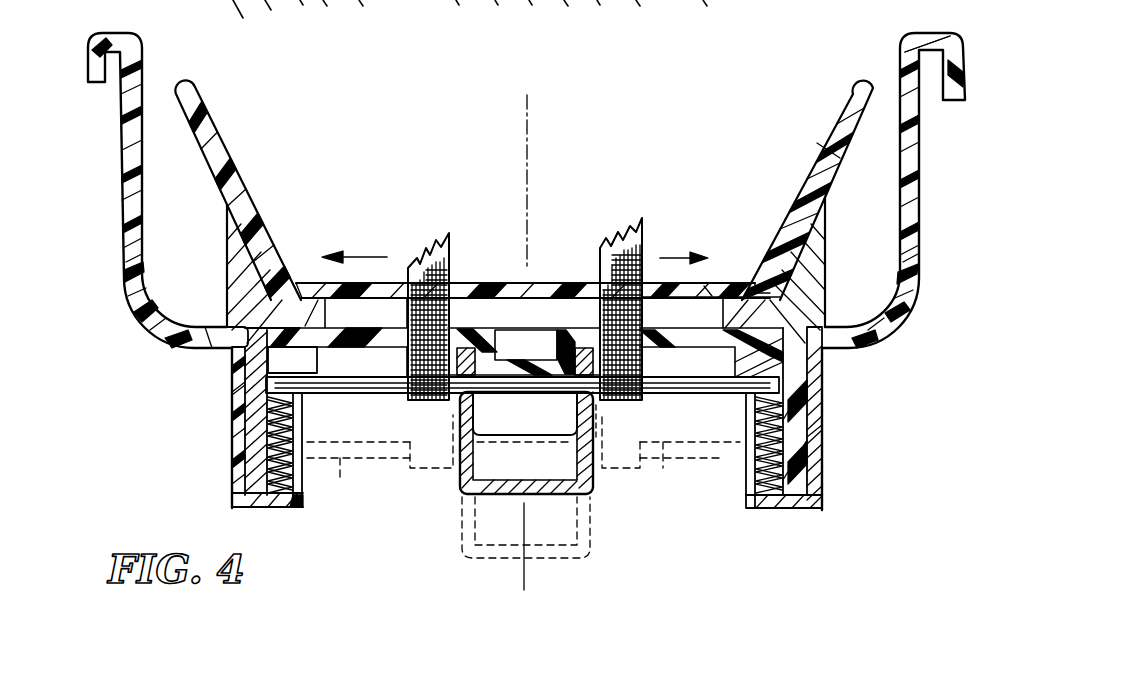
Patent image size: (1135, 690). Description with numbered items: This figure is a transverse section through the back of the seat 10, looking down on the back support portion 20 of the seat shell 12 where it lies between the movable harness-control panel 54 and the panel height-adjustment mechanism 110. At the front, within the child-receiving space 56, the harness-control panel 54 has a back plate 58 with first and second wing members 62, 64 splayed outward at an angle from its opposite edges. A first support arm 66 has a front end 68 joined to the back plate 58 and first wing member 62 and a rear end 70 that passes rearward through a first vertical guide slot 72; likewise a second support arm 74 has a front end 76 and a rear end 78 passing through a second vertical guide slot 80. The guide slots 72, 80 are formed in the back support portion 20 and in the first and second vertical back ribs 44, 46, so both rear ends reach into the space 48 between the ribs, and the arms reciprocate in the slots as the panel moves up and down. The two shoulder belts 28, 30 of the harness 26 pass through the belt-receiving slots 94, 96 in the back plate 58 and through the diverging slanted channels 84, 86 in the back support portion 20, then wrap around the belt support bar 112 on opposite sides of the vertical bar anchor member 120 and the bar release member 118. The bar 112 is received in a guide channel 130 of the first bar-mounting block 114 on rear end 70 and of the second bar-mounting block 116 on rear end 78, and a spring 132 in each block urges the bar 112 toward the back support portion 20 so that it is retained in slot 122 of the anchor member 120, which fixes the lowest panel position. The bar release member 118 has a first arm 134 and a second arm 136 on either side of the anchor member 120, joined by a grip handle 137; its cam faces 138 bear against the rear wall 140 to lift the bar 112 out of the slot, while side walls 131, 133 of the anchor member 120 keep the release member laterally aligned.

The seat 10 is at (802, 68).
The seat shell 12 is at (148, 76).
The back support portion 20 is at (700, 330).
The harness 26 is at (630, 212).
The first shoulder belt 28 is at (433, 262).
The second shoulder belt 30 is at (632, 246).
The first vertical back rib 44 is at (210, 412).
The second vertical back rib 46 is at (828, 433).
The space 48 is at (662, 495).
The harness-control panel 54 is at (790, 150).
The child-receiving space 56 is at (862, 68).
The back plate 58 is at (528, 281).
The first wing member 62 is at (210, 138).
The second wing member 64 is at (808, 197).
The first support arm 66 is at (212, 278).
The front end 68 is at (237, 300).
The rear end 70 is at (250, 432).
The first vertical guide slot 72 is at (232, 348).
The second support arm 74 is at (850, 292).
The front end 76 is at (815, 298).
The rear end 78 is at (793, 470).
The second vertical guide slot 80 is at (802, 374).
The first slanted channel 84 is at (410, 327).
The second slanted channel 86 is at (640, 322).
The first belt-receiving slot 94 is at (350, 288).
The second belt-receiving slot 96 is at (697, 292).
The panel height-adjustment mechanism 110 is at (355, 528).
The belt support bar 112 is at (501, 462).
The first bar-mounting block 114 is at (306, 514).
The second bar-mounting block 116 is at (738, 496).
The bar release member 118 is at (457, 490).
The vertical bar anchor member 120 is at (543, 337).
The slot 122 is at (525, 413).
The guide channel 130 is at (295, 405).
The side wall 131 is at (458, 418).
The spring 132 is at (298, 436).
The side wall 133 is at (600, 416).
The first arm 134 is at (473, 470).
The second arm 136 is at (577, 472).
The grip handle 137 is at (505, 497).
The cam faces 138 is at (455, 338).
The rear wall 140 is at (492, 358).